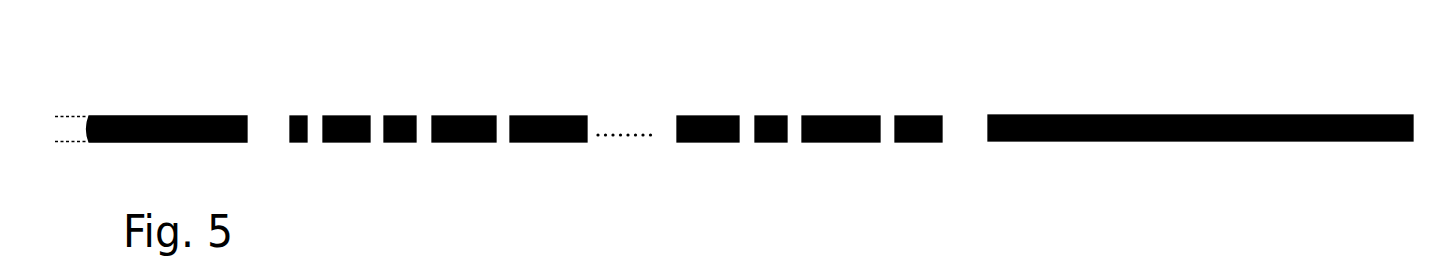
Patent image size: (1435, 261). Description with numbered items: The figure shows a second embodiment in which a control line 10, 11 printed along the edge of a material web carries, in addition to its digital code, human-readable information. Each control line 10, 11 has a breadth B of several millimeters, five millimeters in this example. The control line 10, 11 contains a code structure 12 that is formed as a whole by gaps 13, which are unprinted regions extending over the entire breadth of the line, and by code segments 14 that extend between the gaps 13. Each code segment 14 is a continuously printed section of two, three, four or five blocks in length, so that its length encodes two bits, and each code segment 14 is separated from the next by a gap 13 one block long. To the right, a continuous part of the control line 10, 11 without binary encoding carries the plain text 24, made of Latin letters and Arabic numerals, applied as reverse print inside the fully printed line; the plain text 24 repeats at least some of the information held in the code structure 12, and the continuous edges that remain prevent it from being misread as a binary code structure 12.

The control line 10 is at (229, 104).
The control line 11 is at (324, 105).
The code structure 12 is at (880, 94).
The gap 13 is at (506, 103).
The code segment 14 is at (410, 103).
The plain text 24 is at (1144, 106).
The breadth B is at (69, 167).